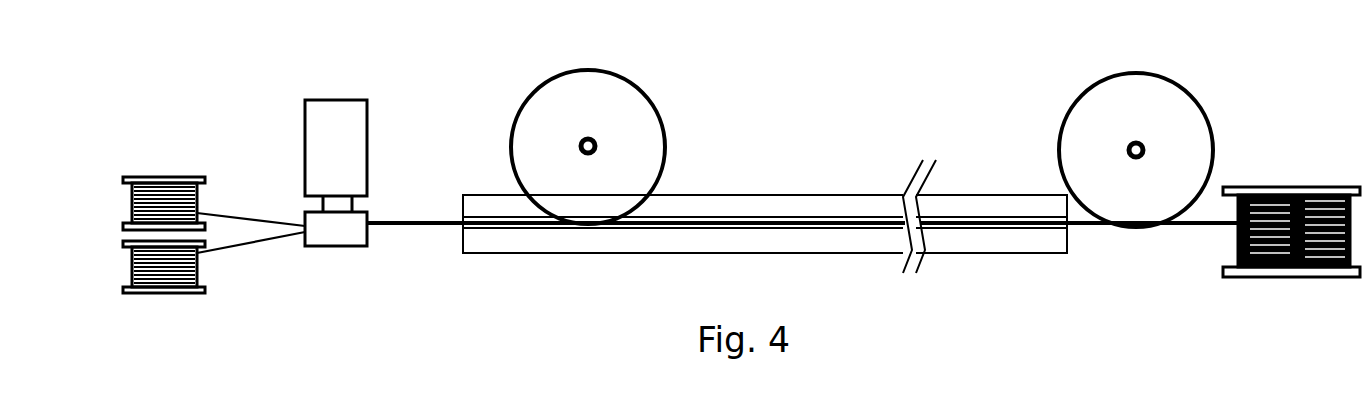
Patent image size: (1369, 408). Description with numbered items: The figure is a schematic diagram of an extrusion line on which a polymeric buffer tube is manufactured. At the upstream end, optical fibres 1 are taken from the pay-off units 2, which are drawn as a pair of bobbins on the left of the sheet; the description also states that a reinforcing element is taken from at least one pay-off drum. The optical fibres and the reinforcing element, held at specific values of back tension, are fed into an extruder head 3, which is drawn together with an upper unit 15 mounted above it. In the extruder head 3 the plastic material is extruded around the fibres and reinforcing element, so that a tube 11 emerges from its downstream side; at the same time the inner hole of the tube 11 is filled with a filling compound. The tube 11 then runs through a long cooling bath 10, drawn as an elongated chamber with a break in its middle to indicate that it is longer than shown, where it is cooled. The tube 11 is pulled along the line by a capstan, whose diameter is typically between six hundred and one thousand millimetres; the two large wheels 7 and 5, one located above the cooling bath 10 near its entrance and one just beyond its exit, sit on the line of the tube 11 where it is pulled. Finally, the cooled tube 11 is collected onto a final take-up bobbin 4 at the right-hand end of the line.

The optical fibres 1 is at (232, 215).
The supply spools 2 is at (147, 192).
The extruder head 3 is at (345, 235).
The final take-up bobbin 4 is at (1297, 192).
The second roller 5 is at (1082, 155).
The first roller 7 is at (560, 108).
The cooling bath 10 is at (745, 202).
The tube 11 is at (415, 228).
The control unit 15 is at (337, 135).